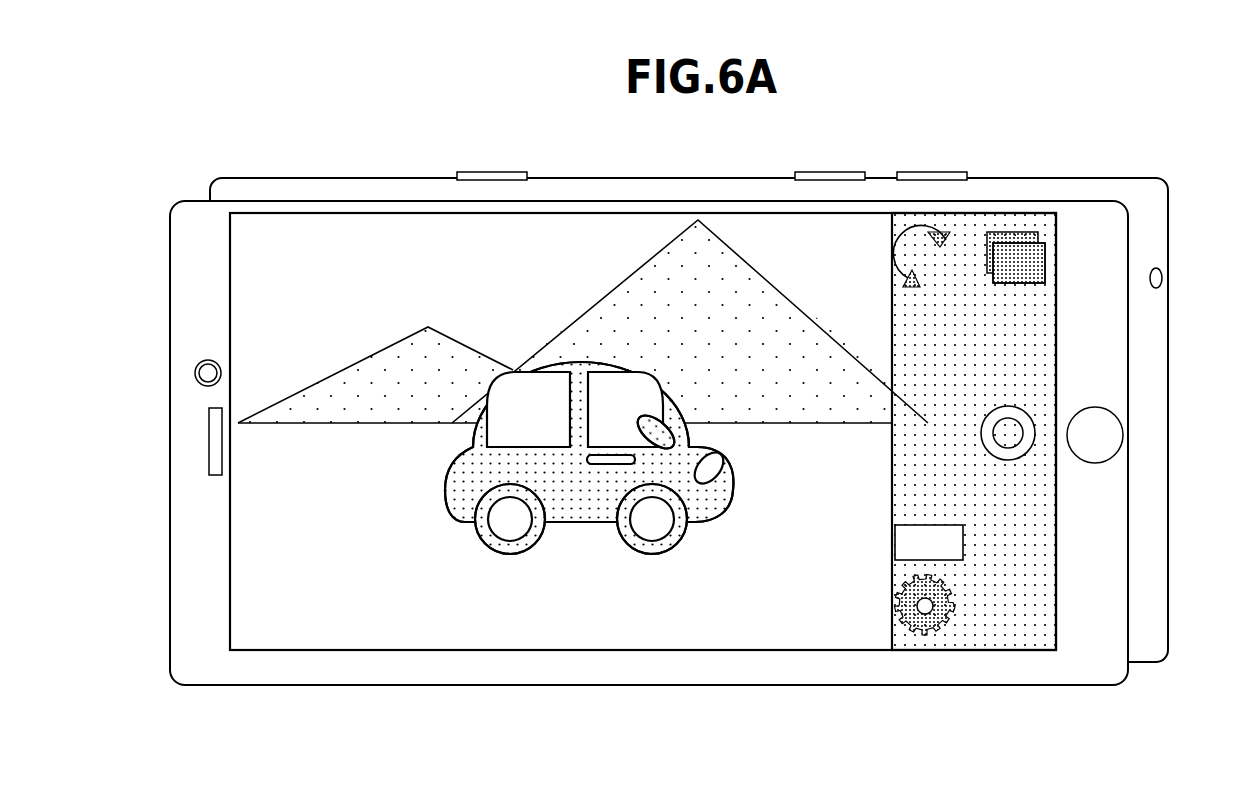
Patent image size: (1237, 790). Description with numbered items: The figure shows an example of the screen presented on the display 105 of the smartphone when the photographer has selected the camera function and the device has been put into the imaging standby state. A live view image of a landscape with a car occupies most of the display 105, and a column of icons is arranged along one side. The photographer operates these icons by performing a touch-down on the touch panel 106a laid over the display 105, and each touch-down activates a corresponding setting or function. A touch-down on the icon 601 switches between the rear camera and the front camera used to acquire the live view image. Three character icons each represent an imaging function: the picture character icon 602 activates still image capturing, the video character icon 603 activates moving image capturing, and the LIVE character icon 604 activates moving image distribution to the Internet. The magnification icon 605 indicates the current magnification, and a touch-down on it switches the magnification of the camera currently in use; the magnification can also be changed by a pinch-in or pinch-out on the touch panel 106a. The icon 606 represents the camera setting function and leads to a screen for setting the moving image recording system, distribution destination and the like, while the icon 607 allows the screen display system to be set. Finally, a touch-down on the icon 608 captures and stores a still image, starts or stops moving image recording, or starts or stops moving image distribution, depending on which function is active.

The display 105 is at (592, 212).
The touch panel 106a is at (643, 392).
The icon 601 is at (905, 230).
The picture character icon 602 is at (920, 352).
The video character icon 603 is at (898, 430).
The LIVE character icon 604 is at (898, 497).
The magnification icon 605 is at (893, 545).
The icon 606 is at (897, 610).
The icon 607 is at (1015, 228).
The icon 608 is at (1022, 411).